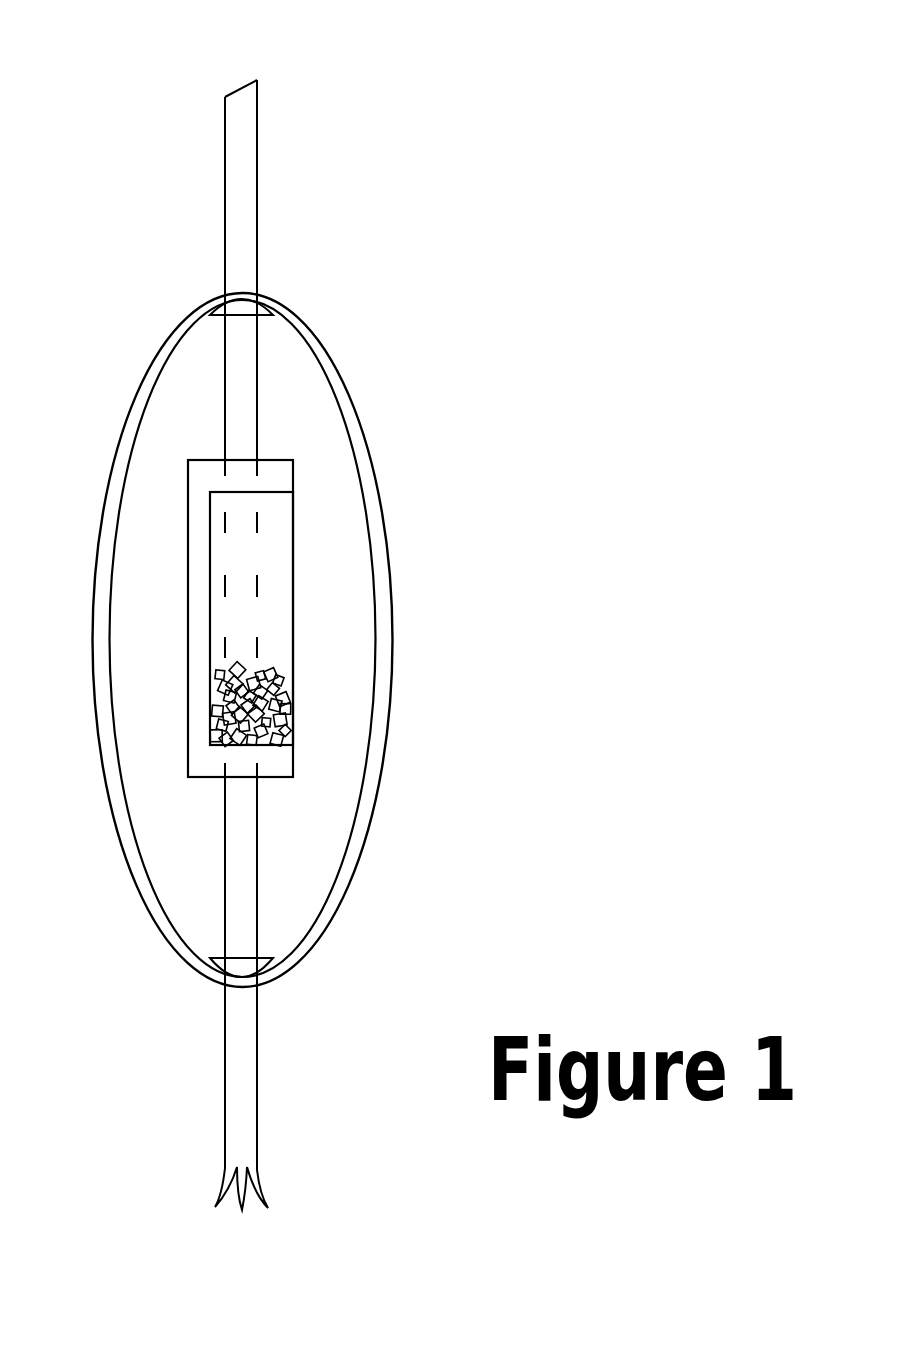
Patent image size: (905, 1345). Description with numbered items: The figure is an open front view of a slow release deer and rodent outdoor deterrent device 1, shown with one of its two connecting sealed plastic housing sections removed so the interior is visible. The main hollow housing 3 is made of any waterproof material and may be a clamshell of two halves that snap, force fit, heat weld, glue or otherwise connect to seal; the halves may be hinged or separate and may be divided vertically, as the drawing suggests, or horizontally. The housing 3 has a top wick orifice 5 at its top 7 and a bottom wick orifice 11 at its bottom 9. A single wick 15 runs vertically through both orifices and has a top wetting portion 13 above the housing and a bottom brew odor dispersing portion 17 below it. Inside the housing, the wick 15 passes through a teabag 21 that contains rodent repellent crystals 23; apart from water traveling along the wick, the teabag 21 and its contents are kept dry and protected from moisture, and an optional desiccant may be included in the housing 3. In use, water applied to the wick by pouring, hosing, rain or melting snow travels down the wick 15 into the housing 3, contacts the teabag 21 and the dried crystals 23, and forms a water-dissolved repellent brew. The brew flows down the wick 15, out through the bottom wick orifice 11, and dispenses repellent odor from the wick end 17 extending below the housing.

The slow release deer and rodent outdoor deterrent device 1 is at (443, 306).
The main hollow housing 3 is at (372, 485).
The top wick orifice 5 is at (258, 292).
The top 7 is at (177, 320).
The bottom 9 is at (158, 935).
The bottom wick orifice 11 is at (260, 978).
The top (wetting) portion 13 is at (240, 192).
The wick 15 is at (241, 86).
The bottom (brew odor dispersing) portion 17 is at (233, 1183).
The teabag 21 is at (295, 617).
The rodent repellent crystals 23 is at (288, 718).